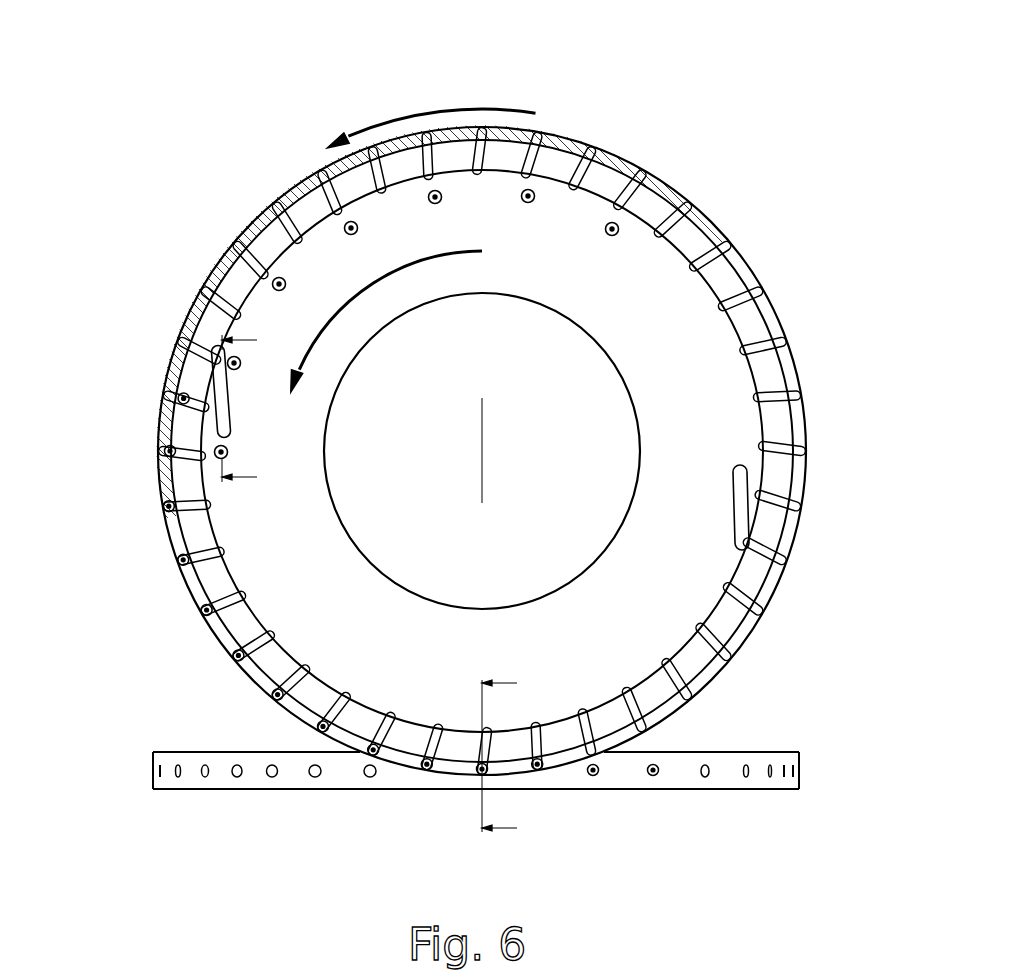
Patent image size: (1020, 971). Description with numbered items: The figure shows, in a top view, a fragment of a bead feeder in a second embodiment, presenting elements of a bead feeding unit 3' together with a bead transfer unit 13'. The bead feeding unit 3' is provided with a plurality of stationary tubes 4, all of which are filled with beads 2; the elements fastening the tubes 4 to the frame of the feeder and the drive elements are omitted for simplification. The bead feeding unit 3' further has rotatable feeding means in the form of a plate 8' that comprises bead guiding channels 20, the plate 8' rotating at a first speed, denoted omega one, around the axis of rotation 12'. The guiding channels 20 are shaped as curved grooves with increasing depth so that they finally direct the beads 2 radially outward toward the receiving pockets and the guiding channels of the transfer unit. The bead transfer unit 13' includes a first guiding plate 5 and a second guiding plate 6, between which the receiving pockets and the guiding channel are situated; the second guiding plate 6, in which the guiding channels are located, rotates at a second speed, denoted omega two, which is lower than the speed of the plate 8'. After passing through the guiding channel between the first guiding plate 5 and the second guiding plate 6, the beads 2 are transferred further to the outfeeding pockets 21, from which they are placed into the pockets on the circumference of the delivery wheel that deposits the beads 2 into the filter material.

The bead transfer unit 13' is at (460, 424).
The bead feeding unit 3' is at (460, 395).
The bead 2 is at (346, 225).
The tube 4 is at (435, 197).
The first guiding plate 5 is at (770, 375).
The second guiding plate 6 is at (658, 188).
The plate 8' is at (387, 484).
The axis of rotation 12' is at (664, 354).
The bead guiding channel 20 is at (225, 402).
The outfeeding pocket 21 is at (690, 205).